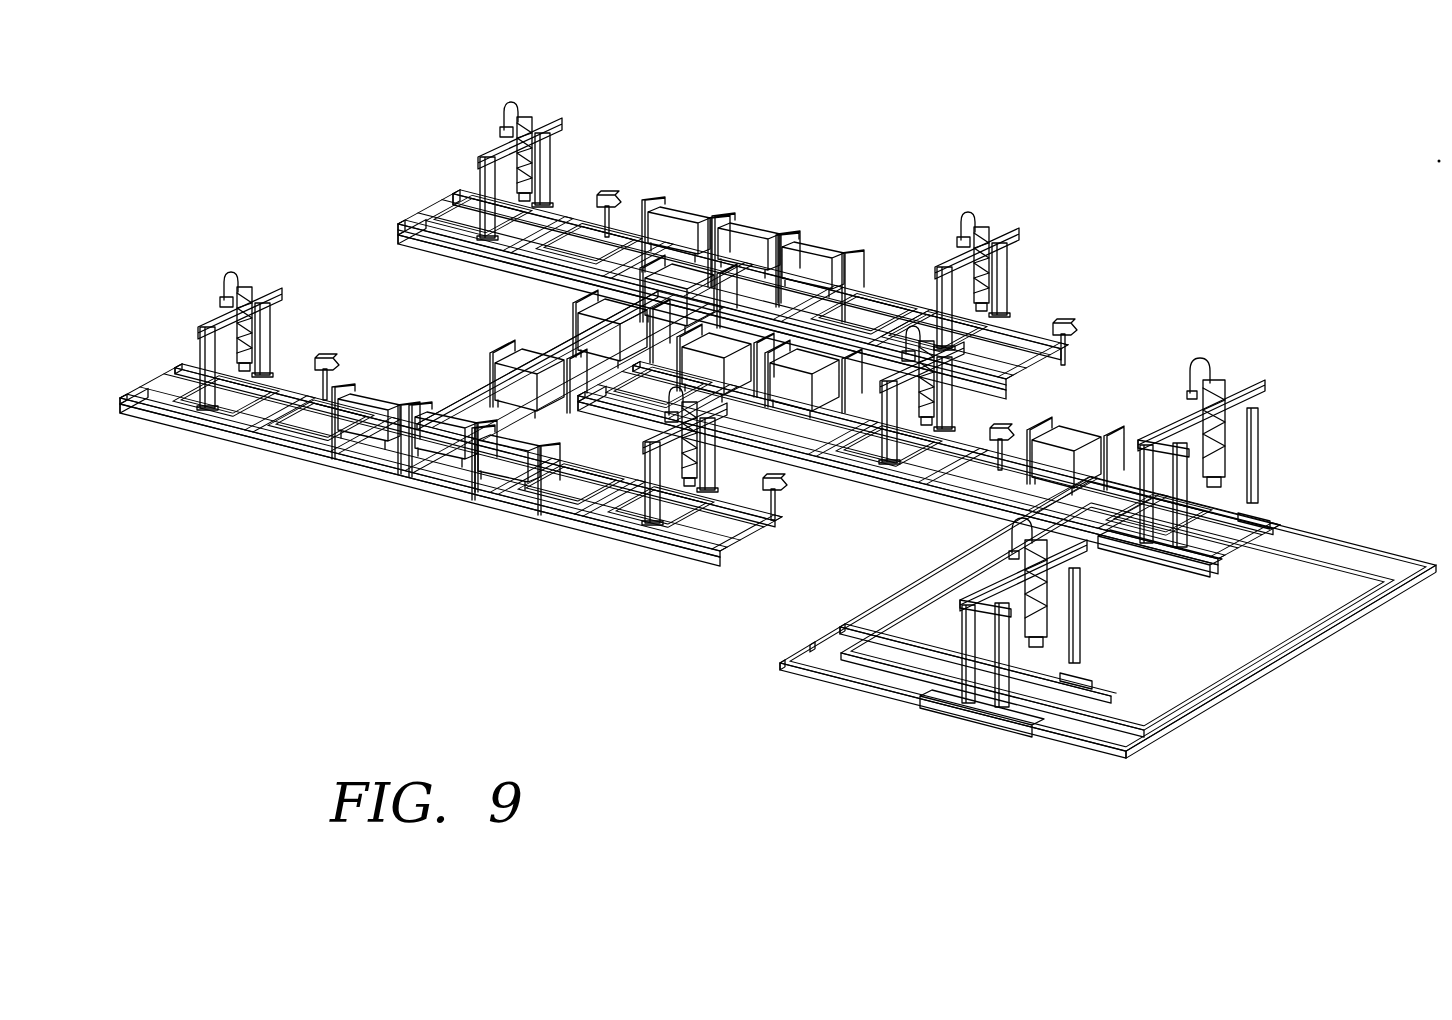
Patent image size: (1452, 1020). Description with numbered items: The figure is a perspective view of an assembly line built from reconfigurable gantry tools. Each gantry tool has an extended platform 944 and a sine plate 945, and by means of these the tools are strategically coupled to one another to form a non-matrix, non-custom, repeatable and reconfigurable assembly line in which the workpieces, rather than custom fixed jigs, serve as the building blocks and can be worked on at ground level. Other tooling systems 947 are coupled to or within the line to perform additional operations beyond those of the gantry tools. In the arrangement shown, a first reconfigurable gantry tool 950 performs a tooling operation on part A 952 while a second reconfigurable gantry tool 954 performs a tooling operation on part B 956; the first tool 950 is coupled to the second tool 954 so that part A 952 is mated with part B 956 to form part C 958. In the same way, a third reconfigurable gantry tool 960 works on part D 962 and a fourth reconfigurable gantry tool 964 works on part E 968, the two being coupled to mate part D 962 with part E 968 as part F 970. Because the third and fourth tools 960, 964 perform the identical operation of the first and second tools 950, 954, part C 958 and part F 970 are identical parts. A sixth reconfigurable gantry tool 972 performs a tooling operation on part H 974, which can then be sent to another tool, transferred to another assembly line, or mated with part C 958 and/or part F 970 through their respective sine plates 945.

The extended platform 944 is at (620, 238).
The sine plate 945 is at (662, 200).
The other tooling system 947 is at (1226, 372).
The first reconfigurable gantry tool 950 is at (252, 278).
The part A 952 is at (386, 405).
The second reconfigurable gantry tool 954 is at (674, 500).
The part B 956 is at (490, 462).
The part C 958 is at (444, 422).
The third reconfigurable gantry tool 960 is at (532, 106).
The part D 962 is at (698, 212).
The fourth reconfigurable gantry tool 964 is at (992, 222).
The part E 968 is at (810, 246).
The part F 970 is at (755, 232).
The sixth reconfigurable gantry tool 972 is at (908, 442).
The part H 974 is at (796, 400).